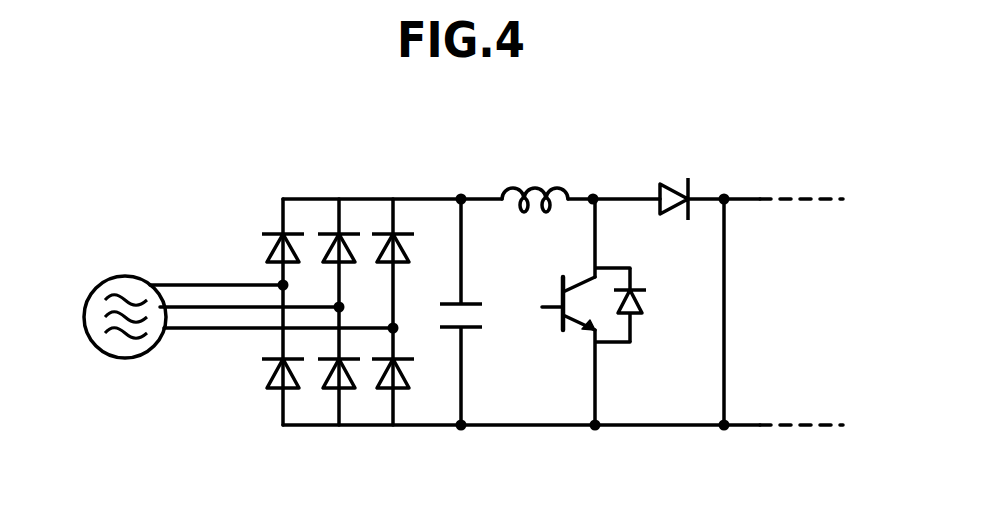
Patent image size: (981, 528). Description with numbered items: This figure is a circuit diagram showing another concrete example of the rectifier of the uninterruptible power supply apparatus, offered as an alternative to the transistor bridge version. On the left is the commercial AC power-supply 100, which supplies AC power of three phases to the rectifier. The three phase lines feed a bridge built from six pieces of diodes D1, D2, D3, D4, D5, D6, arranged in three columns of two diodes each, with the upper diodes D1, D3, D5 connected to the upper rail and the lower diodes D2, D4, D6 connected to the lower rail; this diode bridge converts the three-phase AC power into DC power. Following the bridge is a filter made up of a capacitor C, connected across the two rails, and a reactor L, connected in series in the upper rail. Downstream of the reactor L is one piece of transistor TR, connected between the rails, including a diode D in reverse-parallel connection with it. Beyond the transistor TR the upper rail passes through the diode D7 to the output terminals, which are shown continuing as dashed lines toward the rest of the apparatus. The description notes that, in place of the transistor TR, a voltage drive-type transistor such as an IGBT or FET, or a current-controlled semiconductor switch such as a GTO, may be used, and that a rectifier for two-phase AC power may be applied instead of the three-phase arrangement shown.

The commercial AC power-supply 100 is at (120, 275).
The diode D1 is at (296, 243).
The diode D2 is at (292, 390).
The diode D3 is at (349, 243).
The diode D4 is at (347, 390).
The diode D5 is at (404, 243).
The diode D6 is at (401, 390).
The capacitor C is at (486, 318).
The reactor L is at (532, 183).
The transistor TR is at (548, 307).
The diode D is at (643, 312).
The output diode D7 is at (670, 176).